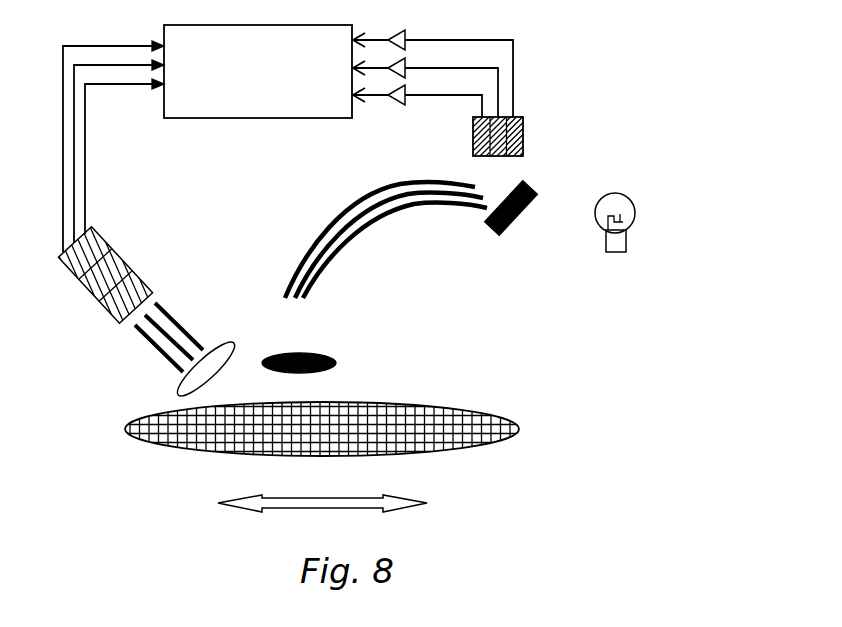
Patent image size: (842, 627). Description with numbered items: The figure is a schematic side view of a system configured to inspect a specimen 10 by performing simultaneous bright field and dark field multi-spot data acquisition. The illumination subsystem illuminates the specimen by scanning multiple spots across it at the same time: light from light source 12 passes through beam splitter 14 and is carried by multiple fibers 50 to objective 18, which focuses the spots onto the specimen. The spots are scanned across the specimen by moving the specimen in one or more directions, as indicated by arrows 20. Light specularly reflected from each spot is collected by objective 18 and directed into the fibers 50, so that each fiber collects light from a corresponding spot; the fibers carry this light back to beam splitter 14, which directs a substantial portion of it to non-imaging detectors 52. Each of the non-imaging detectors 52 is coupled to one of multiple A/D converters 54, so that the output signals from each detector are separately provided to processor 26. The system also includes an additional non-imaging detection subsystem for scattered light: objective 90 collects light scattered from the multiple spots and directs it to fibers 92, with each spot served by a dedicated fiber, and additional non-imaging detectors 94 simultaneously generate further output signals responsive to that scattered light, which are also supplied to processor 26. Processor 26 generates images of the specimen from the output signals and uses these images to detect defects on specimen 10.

The processor 26 is at (245, 100).
The additional non-imaging detectors 94 is at (118, 244).
The fibers 92 is at (190, 311).
The objective 90 is at (232, 345).
The objective 18 is at (330, 357).
The specimen 10 is at (497, 413).
The arrows 20 is at (405, 508).
The fibers 50 is at (333, 208).
The beam splitter 14 is at (529, 184).
The light source 12 is at (630, 208).
The non-imaging detectors 52 is at (523, 121).
The A/D converters 54 is at (397, 110).